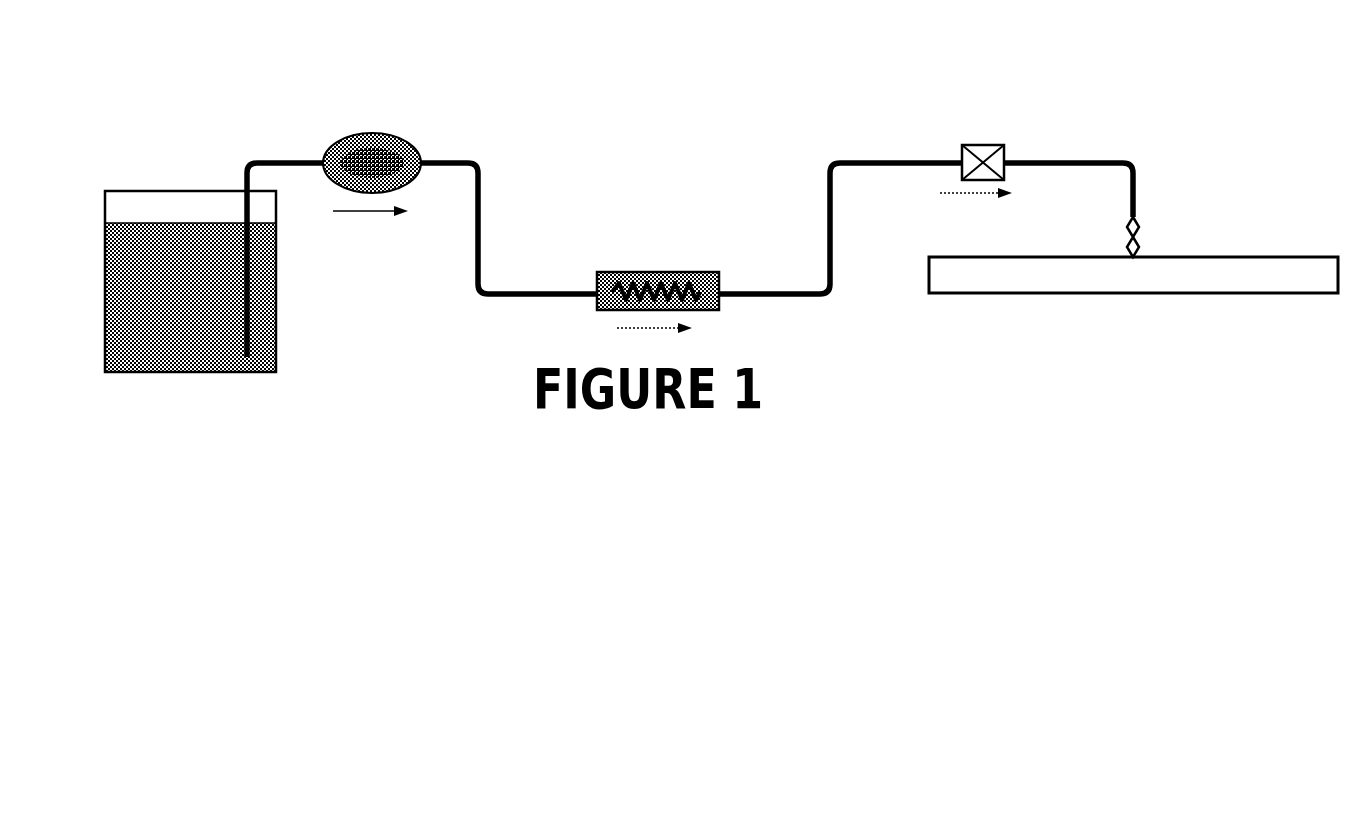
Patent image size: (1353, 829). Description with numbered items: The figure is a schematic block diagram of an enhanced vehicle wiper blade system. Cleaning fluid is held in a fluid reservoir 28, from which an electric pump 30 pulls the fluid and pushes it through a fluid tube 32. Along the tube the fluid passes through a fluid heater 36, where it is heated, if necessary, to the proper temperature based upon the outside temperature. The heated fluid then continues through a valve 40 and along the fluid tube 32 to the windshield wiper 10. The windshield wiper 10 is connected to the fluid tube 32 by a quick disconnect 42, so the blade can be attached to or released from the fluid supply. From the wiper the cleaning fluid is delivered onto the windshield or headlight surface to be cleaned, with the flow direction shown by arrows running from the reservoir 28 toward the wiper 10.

The windshield wiper 10 is at (1141, 292).
The fluid reservoir 28 is at (155, 210).
The electric pump 30 is at (333, 138).
The fluid tube 32 is at (487, 212).
The fluid heater 36 is at (727, 272).
The valve 40 is at (983, 148).
The quick disconnect 42 is at (1138, 208).